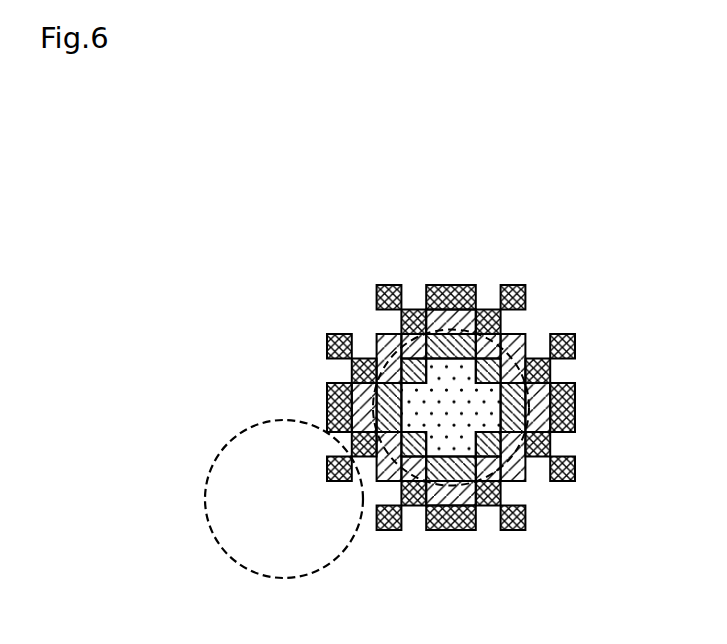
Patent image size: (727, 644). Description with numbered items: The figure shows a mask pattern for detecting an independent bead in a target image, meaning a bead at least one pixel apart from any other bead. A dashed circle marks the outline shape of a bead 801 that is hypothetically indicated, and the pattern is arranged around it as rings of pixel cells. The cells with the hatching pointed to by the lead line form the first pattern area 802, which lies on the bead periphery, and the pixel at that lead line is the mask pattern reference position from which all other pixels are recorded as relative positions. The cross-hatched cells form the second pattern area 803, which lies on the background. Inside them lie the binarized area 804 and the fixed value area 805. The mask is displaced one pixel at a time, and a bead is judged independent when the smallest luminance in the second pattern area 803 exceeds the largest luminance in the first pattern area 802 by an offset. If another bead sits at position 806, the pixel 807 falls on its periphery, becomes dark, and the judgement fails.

The outline shape of a bead 801 is at (508, 335).
The first pattern area 802 is at (399, 336).
The second pattern area 803 is at (451, 412).
The binarized area 804 is at (558, 383).
The fixed value area 805 is at (460, 442).
The position of another bead 806 is at (255, 425).
The pixel 807 is at (338, 483).